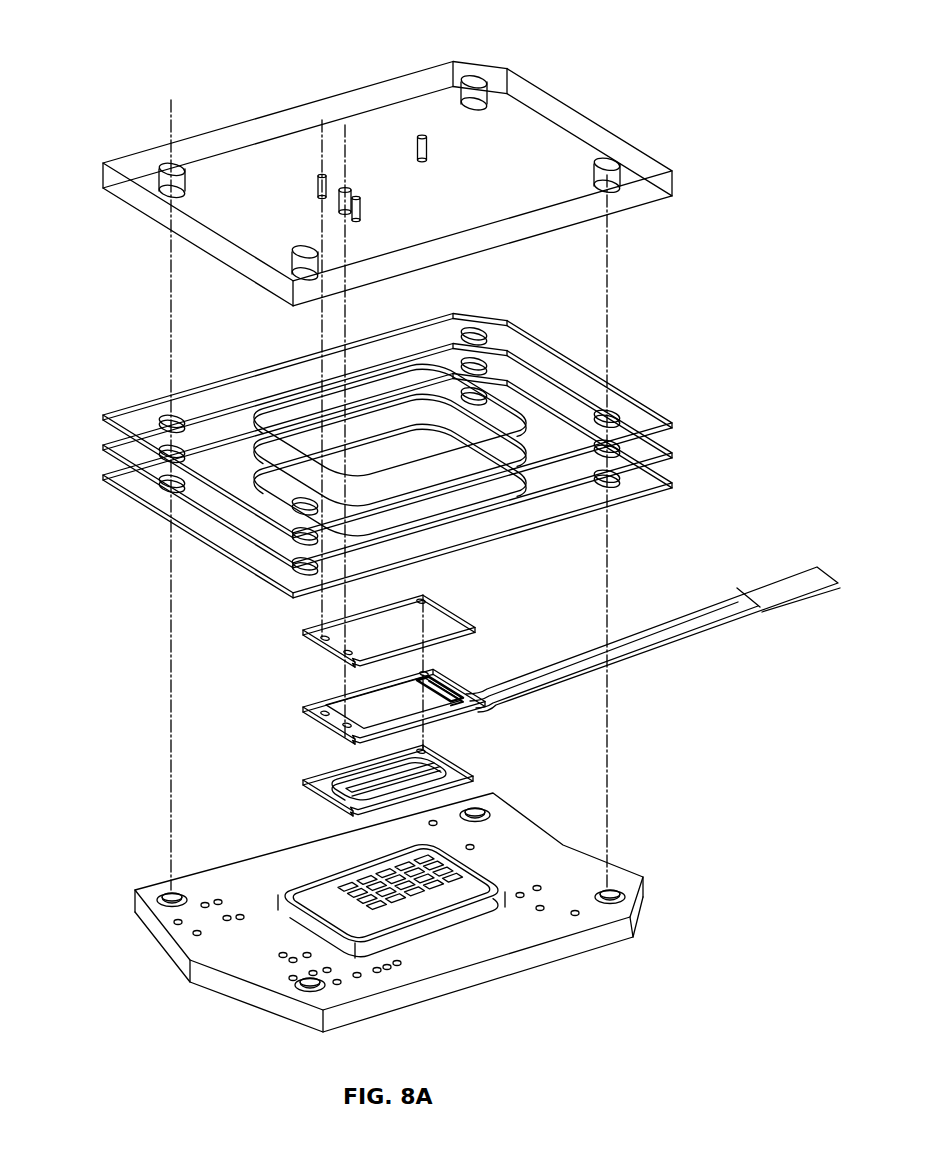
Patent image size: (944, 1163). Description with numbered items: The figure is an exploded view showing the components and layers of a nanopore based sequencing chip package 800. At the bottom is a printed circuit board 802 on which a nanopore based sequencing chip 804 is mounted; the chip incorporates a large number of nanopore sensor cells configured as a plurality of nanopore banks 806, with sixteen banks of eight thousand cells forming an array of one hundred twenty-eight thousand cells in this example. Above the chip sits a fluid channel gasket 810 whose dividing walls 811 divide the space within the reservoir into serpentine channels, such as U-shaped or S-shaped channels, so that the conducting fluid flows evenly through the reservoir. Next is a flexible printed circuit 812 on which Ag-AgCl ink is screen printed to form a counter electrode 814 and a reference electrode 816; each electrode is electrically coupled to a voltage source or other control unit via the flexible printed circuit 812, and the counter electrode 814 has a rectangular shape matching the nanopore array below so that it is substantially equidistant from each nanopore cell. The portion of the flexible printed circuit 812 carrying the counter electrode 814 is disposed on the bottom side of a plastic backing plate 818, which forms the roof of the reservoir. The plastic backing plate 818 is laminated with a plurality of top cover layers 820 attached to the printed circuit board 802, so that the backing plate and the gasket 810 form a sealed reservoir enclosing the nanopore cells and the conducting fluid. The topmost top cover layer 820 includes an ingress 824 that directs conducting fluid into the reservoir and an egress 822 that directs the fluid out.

The nanopore based sequencing chip package 800 is at (140, 45).
The printed circuit board 802 is at (389, 921).
The nanopore based sequencing chip 804 is at (439, 927).
The nanopore banks 806 is at (401, 909).
The fluid channel gasket 810 is at (396, 776).
The dividing walls 811 is at (378, 775).
The flexible printed circuit 812 is at (644, 655).
The counter electrode 814 is at (436, 681).
The reference electrode 816 is at (442, 682).
The plastic backing plate 818 is at (448, 623).
The top cover layers 820 is at (684, 182).
The egress 822 is at (344, 186).
The ingress 824 is at (321, 171).